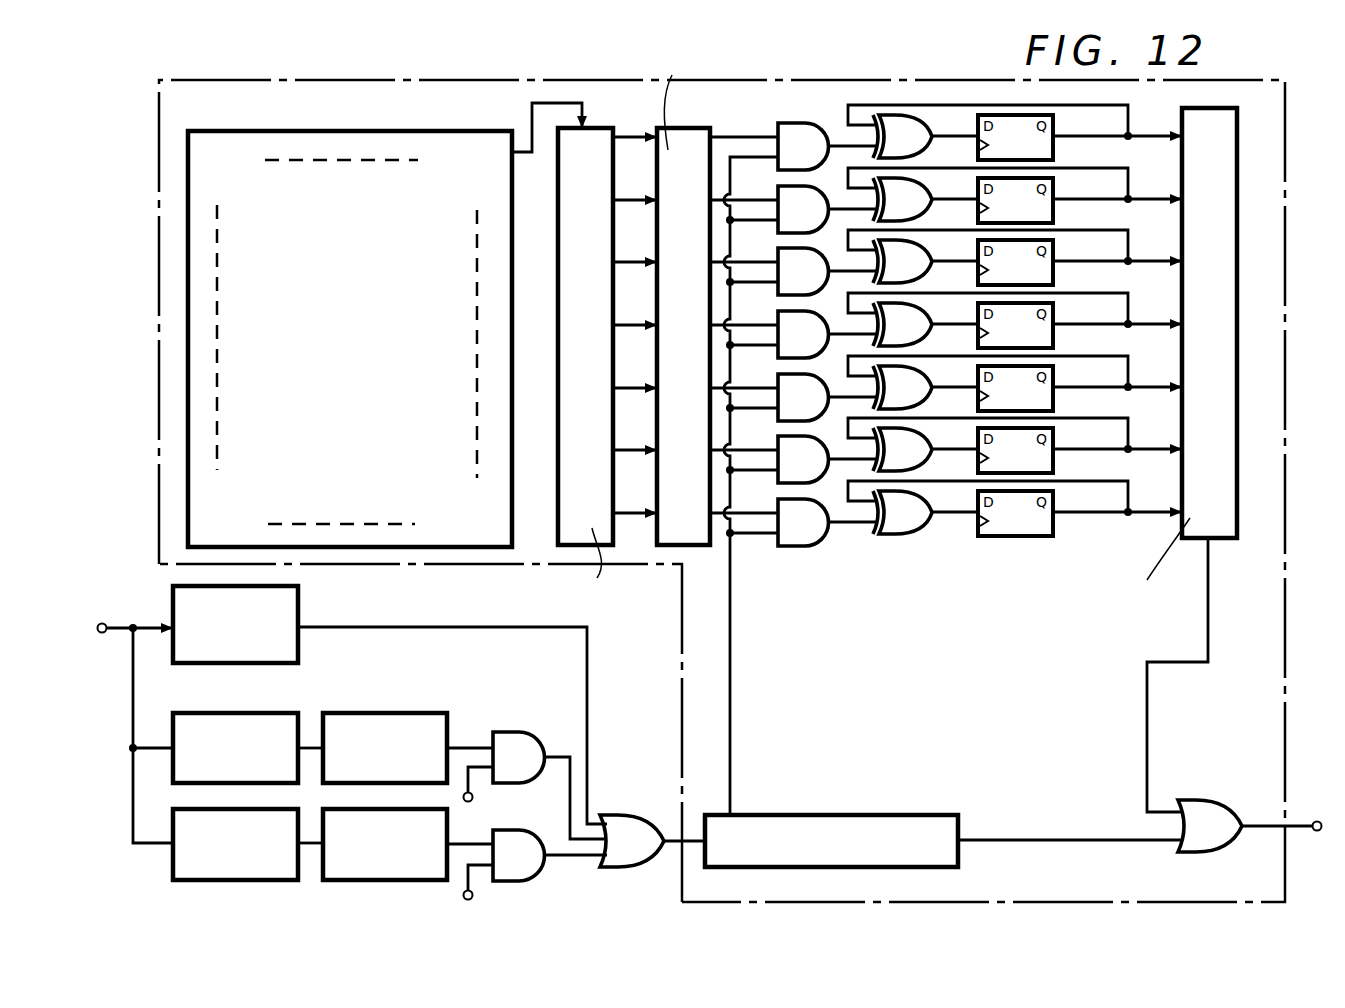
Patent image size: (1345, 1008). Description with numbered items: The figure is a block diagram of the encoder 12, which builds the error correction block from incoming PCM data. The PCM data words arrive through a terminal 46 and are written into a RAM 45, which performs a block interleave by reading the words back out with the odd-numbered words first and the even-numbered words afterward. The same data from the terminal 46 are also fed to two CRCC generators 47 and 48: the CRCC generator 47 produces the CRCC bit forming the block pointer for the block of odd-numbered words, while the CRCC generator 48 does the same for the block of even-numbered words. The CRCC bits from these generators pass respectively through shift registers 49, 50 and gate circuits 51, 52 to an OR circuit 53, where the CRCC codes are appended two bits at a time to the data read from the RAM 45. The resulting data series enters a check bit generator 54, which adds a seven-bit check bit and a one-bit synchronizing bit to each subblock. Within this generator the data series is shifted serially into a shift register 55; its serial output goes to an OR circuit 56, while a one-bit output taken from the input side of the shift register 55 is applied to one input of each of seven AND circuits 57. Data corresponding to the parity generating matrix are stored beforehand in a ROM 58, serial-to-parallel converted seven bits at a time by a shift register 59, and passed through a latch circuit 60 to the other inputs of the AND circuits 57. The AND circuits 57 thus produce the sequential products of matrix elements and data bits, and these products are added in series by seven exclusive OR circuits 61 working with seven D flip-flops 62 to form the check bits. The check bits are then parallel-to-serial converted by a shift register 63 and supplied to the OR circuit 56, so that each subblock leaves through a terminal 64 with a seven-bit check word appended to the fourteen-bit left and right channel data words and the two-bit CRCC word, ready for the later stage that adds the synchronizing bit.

The encoder 12 is at (130, 500).
The RAM 45 is at (298, 602).
The terminal 46 is at (103, 634).
The CRCC generator 47 is at (273, 712).
The CRCC generator 48 is at (173, 866).
The shift register 49 is at (398, 712).
The shift register 50 is at (449, 818).
The gate circuit 51 is at (534, 732).
The gate circuit 52 is at (520, 882).
The OR circuit 53 is at (630, 815).
The check bit generator 54 is at (682, 585).
The shift register 55 is at (806, 815).
The OR circuit 56 is at (1200, 800).
The AND circuits 57 is at (784, 178).
The ROM 58 is at (383, 131).
The shift register 59 is at (620, 128).
The latch circuit 60 is at (680, 128).
The exclusive OR circuits 61 is at (873, 130).
The D flip-flops 62 is at (1053, 148).
The shift register 63 is at (1203, 545).
The terminal 64 is at (1316, 820).